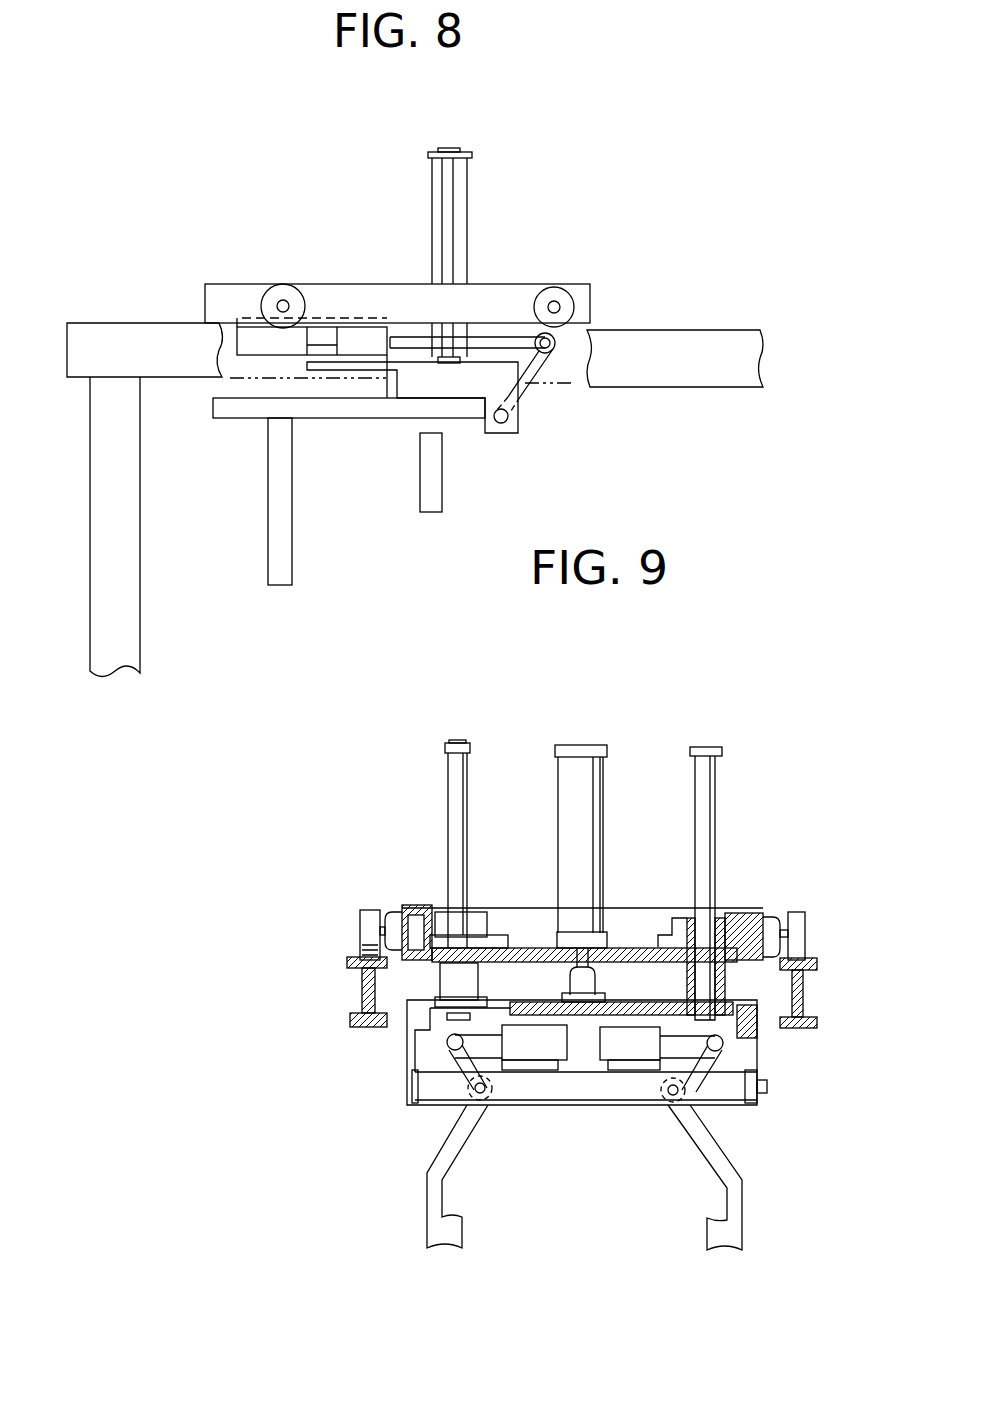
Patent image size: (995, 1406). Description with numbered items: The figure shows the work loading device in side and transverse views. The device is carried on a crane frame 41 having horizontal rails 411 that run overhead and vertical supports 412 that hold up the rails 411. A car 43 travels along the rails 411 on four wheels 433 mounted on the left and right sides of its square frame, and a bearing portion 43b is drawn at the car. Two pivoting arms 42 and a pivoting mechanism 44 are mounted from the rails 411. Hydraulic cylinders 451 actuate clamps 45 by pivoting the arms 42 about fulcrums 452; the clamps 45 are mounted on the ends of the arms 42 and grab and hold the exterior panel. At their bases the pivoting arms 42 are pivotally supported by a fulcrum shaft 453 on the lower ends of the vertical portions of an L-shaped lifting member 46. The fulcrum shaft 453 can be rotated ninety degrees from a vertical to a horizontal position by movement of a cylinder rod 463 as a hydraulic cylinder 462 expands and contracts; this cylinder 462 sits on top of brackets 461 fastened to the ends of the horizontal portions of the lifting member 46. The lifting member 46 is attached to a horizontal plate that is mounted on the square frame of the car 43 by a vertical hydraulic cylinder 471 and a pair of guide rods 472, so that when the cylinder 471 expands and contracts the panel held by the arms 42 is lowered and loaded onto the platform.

In FIG. 8, the crane frame 41 is at (163, 321).
In FIG. 9, the crane frame 41 is at (583, 964).
In FIG. 8, the horizontal rails 411 is at (697, 345).
In FIG. 9, the horizontal rails 411 is at (348, 958).
In FIG. 8, the vertical supports 412 is at (97, 523).
In FIG. 8, the pivoting arms 42 is at (217, 425).
In FIG. 9, the pivoting arms 42 is at (741, 1160).
In FIG. 8, the car 43 is at (596, 288).
In FIG. 9, the car 43 is at (774, 904).
In FIG. 9, the bearing block 43b is at (748, 912).
In FIG. 8, the wheels 433 is at (285, 296).
In FIG. 9, the wheels 433 is at (370, 910).
In FIG. 8, the pivoting mechanism 44 is at (500, 328).
In FIG. 8, the clamps 45 is at (294, 566).
In FIG. 9, the clamps 45 is at (432, 1246).
In FIG. 9, the hydraulic cylinders 451 is at (540, 1052).
In FIG. 9, the fulcrums 452 is at (483, 1100).
In FIG. 8, the fulcrum shaft 453 is at (503, 424).
In FIG. 8, the L-shaped lifting member 46 is at (520, 417).
In FIG. 8, the brackets 461 is at (385, 372).
In FIG. 8, the hydraulic cylinder 462 is at (287, 347).
In FIG. 8, the cylinder rod 463 is at (322, 280).
In FIG. 8, the vertical hydraulic cylinder 471 is at (470, 186).
In FIG. 9, the vertical hydraulic cylinder 471 is at (600, 813).
In FIG. 8, the guide rods 472 is at (453, 217).
In FIG. 9, the guide rods 472 is at (460, 815).